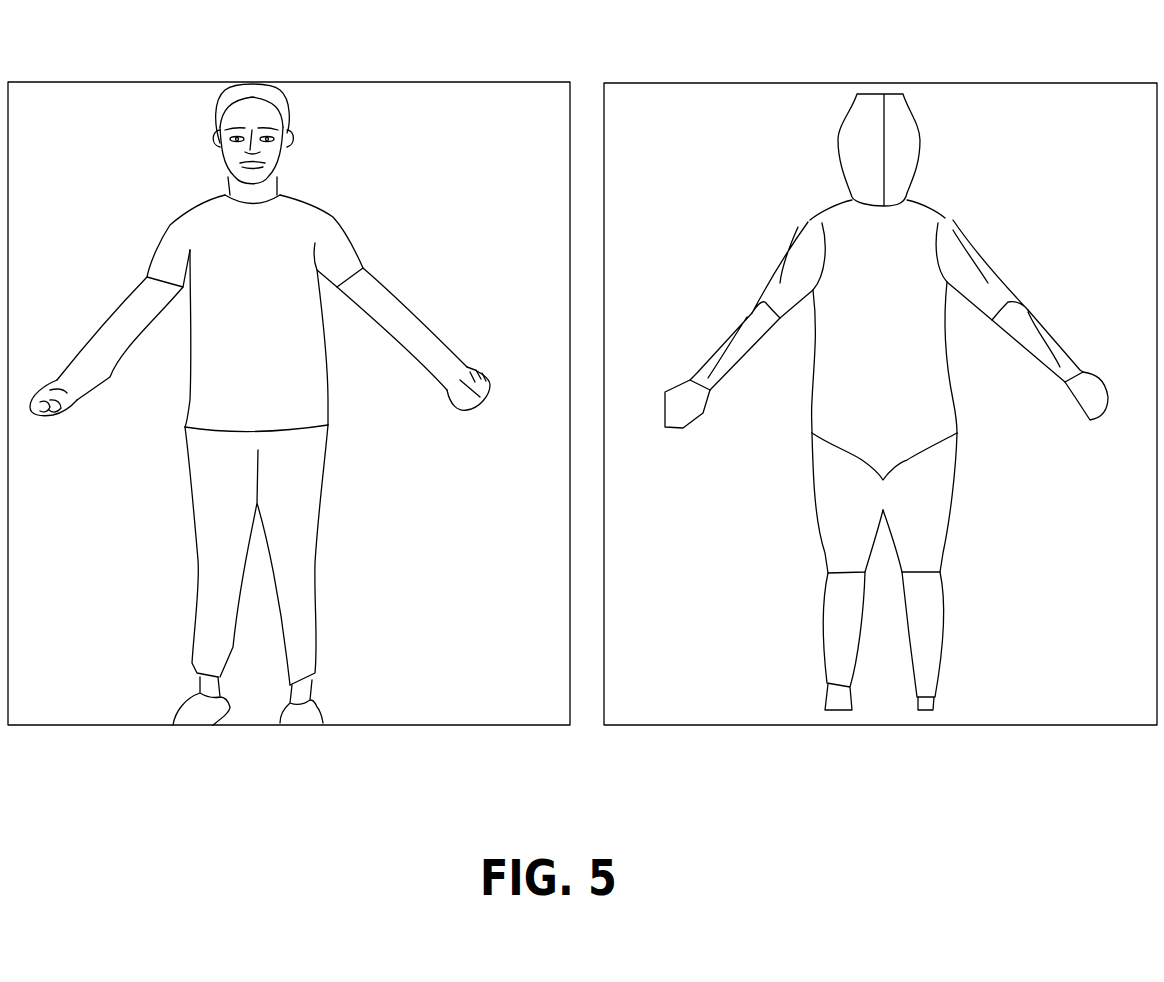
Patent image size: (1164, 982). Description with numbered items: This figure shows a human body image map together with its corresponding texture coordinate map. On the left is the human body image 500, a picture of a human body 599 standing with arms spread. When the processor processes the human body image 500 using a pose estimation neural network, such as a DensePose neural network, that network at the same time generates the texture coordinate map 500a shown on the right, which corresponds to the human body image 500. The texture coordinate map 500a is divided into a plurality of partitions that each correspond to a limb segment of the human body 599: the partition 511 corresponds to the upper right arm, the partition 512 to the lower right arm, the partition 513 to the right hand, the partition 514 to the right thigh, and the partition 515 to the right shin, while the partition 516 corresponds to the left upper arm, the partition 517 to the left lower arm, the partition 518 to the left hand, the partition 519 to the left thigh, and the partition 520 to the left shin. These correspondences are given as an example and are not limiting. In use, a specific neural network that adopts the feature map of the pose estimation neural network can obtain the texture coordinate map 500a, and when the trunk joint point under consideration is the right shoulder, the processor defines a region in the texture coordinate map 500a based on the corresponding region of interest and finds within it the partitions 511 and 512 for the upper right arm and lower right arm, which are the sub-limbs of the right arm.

The human body image 500 is at (245, 771).
The texture coordinate map 500a is at (887, 771).
The human body 599 is at (252, 122).
The partition 511 is at (808, 222).
The partition 512 is at (740, 327).
The partition 513 is at (665, 407).
The partition 514 is at (813, 523).
The partition 515 is at (825, 640).
The partition 516 is at (963, 223).
The partition 517 is at (1032, 307).
The partition 518 is at (1097, 400).
The partition 519 is at (957, 513).
The partition 520 is at (947, 633).